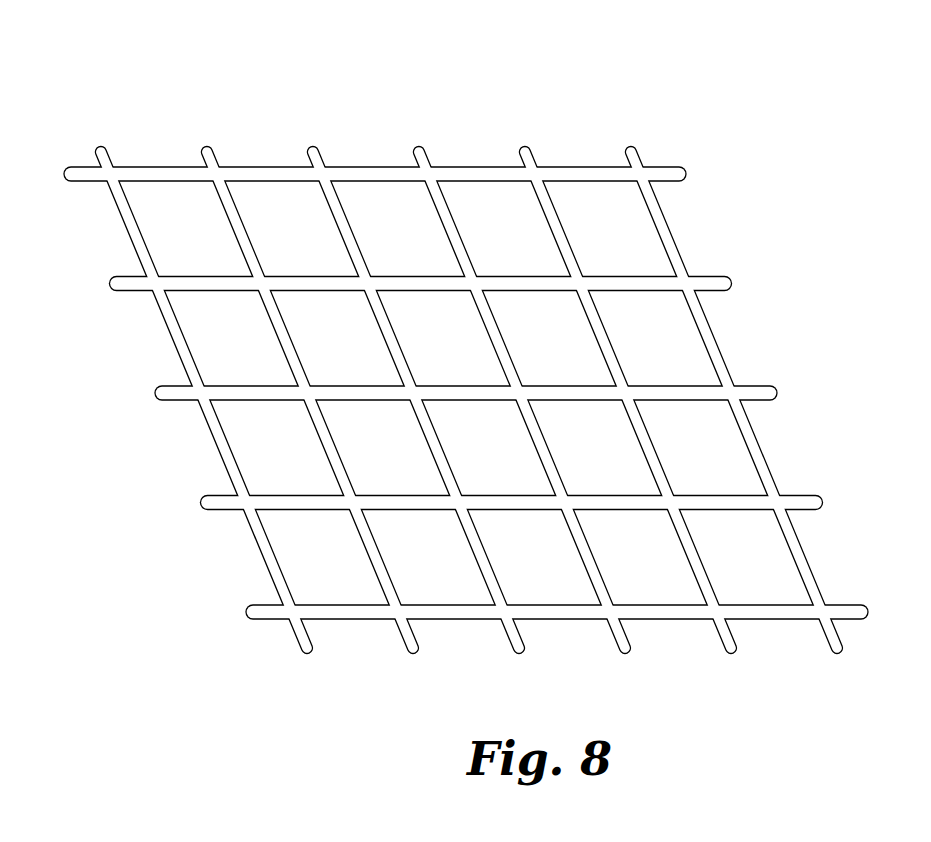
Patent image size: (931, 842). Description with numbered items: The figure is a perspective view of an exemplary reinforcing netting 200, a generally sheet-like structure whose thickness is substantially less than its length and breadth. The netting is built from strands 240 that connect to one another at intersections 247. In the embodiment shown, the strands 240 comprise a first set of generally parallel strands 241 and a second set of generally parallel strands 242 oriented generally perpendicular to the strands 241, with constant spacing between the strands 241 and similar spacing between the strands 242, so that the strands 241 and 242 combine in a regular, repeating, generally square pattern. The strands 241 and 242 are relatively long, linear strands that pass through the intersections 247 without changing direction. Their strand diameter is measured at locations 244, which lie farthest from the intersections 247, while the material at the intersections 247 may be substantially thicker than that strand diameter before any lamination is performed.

The reinforcing netting 200 is at (623, 95).
The strands 240 is at (333, 613).
The first set of generally parallel strands 241 is at (167, 388).
The second set of generally parallel strands 242 is at (205, 152).
The locations farthest from intersections 244 is at (518, 502).
The intersections 247 is at (284, 604).